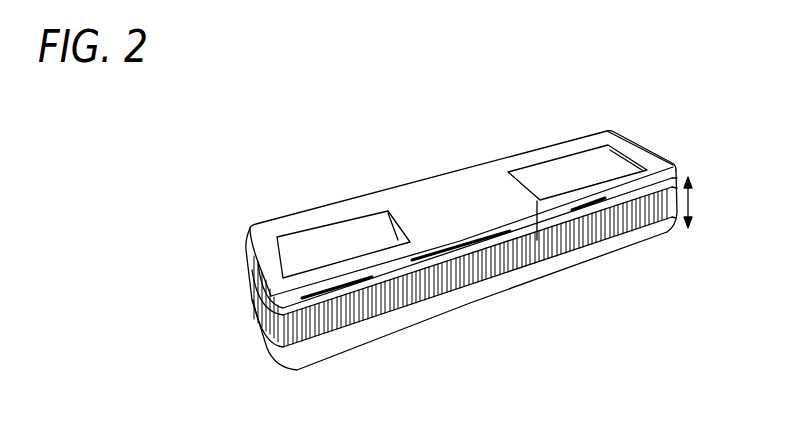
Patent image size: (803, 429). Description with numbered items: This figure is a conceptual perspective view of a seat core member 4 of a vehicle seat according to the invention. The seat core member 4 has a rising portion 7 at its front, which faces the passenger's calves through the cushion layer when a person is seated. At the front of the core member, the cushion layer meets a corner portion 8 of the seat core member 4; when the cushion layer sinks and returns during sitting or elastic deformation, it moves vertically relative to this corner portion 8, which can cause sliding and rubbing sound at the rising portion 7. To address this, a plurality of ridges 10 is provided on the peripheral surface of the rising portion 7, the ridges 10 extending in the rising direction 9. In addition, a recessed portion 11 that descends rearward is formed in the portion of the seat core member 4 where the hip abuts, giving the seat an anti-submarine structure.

The seat core member 4 is at (443, 170).
The rising portion 7 is at (480, 297).
The corner portion 8 is at (532, 232).
The rising direction 9 is at (699, 202).
The ridges 10 is at (327, 337).
The recessed portion 11 is at (337, 263).